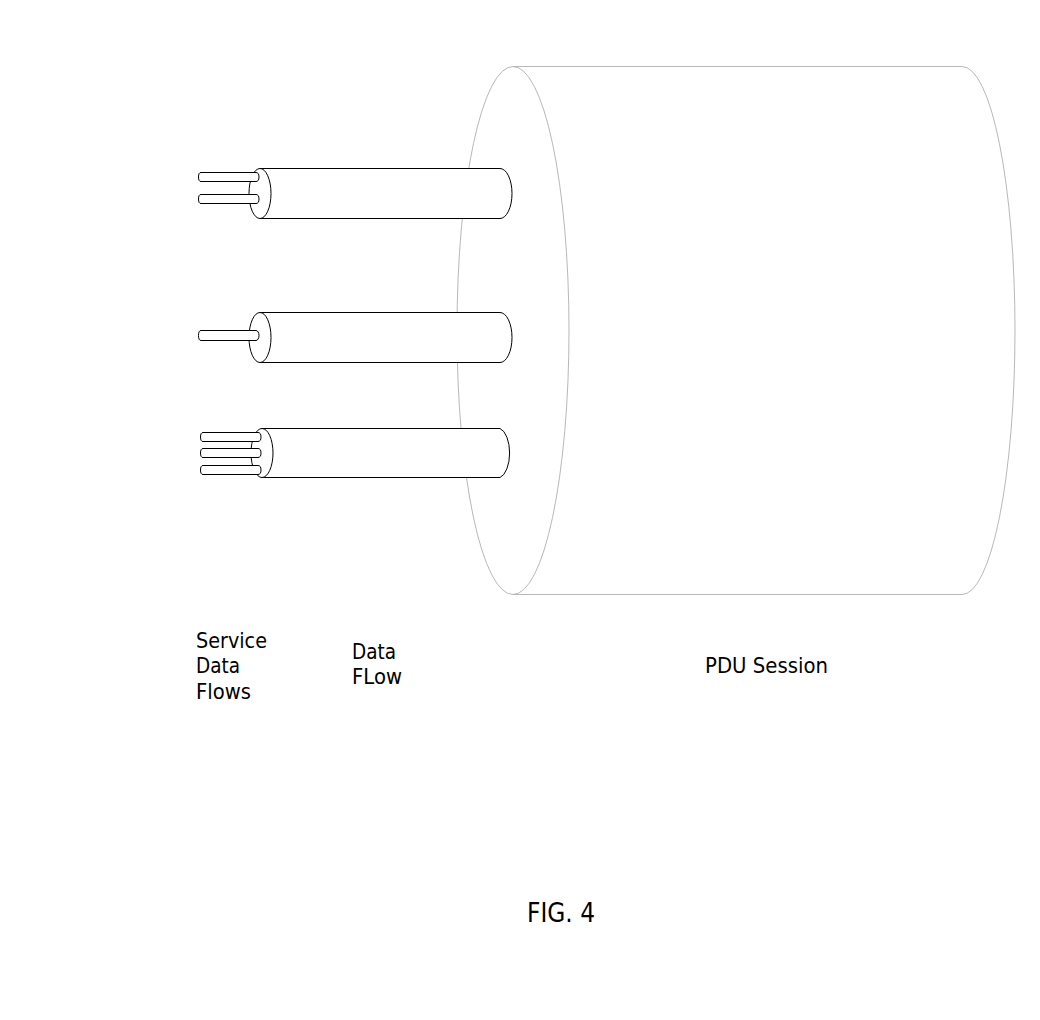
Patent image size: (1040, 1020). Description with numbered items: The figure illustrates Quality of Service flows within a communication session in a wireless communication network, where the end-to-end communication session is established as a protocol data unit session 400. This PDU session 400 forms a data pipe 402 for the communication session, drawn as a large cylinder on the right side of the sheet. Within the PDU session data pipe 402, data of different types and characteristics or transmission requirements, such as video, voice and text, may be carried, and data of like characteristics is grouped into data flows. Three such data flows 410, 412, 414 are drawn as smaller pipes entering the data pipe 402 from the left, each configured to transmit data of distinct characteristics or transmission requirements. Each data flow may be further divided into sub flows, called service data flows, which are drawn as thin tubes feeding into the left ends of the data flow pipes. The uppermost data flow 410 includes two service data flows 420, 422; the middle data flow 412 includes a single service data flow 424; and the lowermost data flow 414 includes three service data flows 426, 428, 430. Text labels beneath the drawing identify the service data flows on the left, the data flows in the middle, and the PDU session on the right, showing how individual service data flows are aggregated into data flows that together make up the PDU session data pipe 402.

The PDU session 400 is at (63, 47).
The data pipe 402 is at (723, 66).
The data flow 410 is at (322, 168).
The data flow 412 is at (322, 312).
The data flow 414 is at (330, 478).
The service data flow 420 is at (229, 174).
The service data flow 422 is at (228, 202).
The service data flow 424 is at (232, 332).
The service data flow 426 is at (203, 436).
The service data flow 428 is at (201, 454).
The service data flow 430 is at (203, 468).